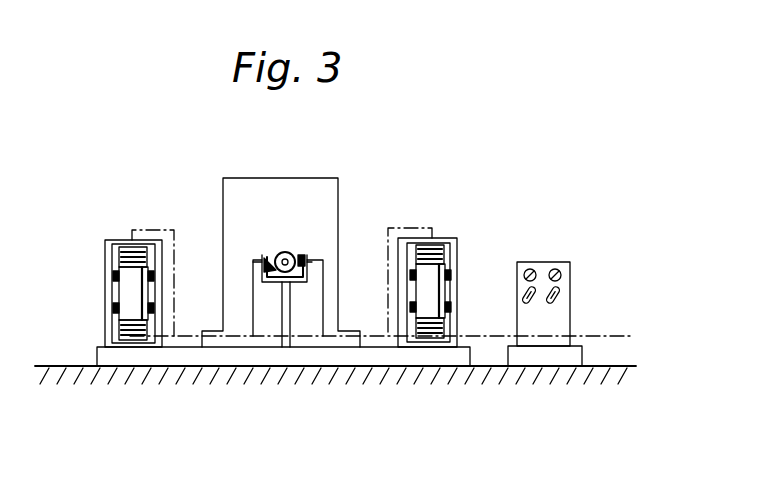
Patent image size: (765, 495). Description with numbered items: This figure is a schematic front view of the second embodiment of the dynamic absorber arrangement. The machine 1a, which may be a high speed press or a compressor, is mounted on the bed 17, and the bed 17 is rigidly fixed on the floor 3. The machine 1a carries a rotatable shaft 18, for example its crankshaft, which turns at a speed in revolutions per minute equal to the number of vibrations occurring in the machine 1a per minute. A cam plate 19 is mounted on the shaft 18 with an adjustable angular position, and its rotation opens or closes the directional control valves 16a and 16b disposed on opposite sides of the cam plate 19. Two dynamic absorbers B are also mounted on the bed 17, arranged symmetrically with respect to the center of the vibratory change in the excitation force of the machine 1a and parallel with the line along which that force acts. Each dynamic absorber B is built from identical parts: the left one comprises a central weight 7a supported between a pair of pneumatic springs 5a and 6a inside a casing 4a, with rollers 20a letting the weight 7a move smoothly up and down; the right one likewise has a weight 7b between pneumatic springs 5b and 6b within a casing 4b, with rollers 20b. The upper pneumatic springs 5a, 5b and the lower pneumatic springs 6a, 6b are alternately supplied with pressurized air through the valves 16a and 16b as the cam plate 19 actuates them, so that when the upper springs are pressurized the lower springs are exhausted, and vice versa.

The machine 1a is at (241, 178).
The floor 3 is at (619, 364).
The casing 4a is at (106, 279).
The casing 4b is at (459, 247).
The upper pneumatic spring 5a is at (113, 244).
The upper pneumatic spring 5b is at (443, 240).
The lower pneumatic spring 6a is at (122, 326).
The lower pneumatic spring 6b is at (443, 334).
The central weight 7a is at (125, 272).
The central weight 7b is at (424, 298).
The directional control valve 16a is at (262, 262).
The directional control valve 16b is at (302, 262).
The bed 17 is at (300, 356).
The shaft 18 is at (280, 260).
The cam plate 19 is at (291, 258).
The rollers 20a is at (114, 306).
The rollers 20b is at (448, 278).
The dynamic absorber B is at (430, 238).